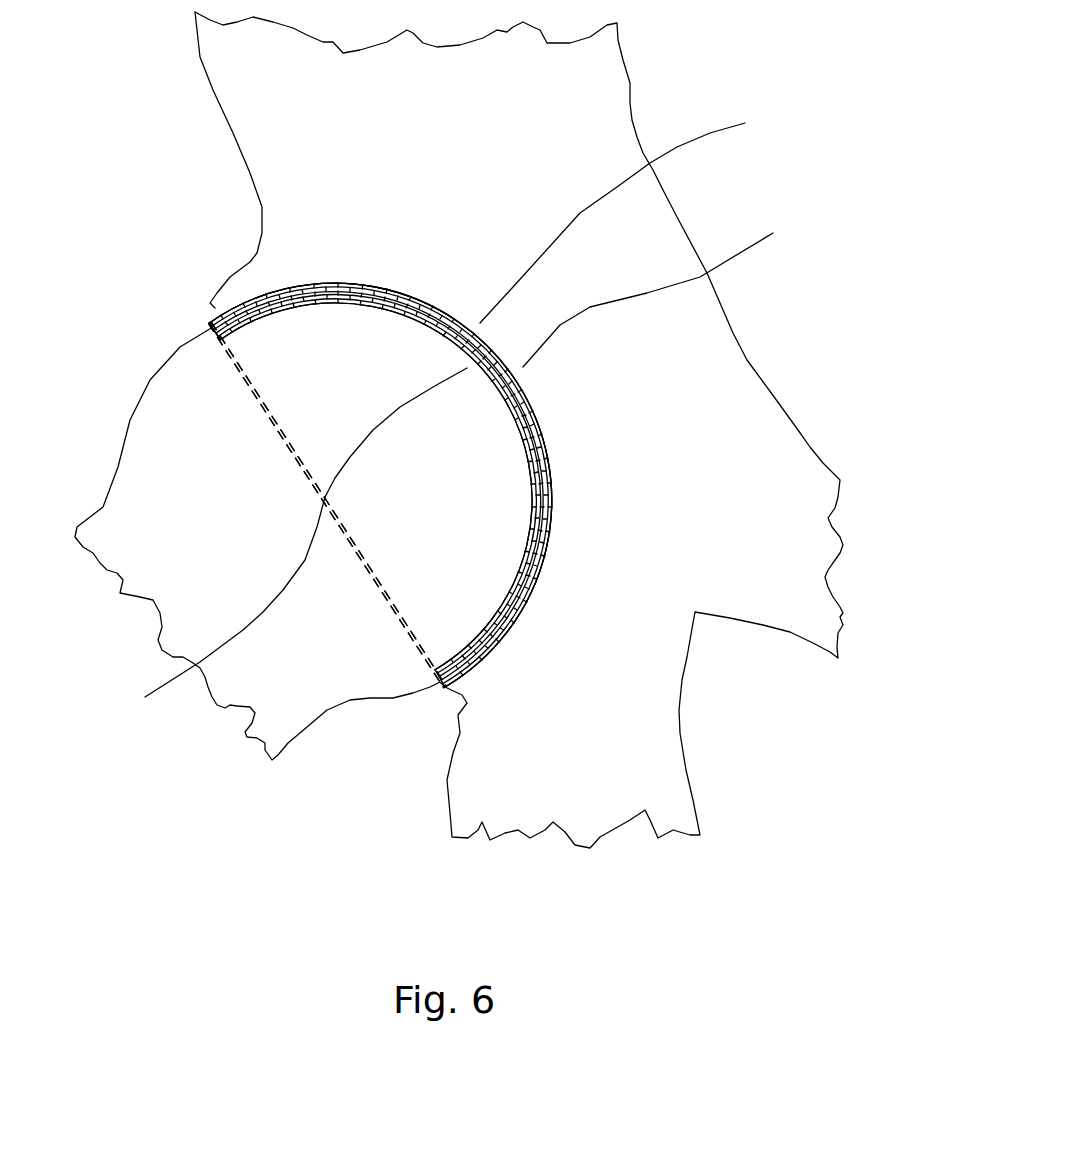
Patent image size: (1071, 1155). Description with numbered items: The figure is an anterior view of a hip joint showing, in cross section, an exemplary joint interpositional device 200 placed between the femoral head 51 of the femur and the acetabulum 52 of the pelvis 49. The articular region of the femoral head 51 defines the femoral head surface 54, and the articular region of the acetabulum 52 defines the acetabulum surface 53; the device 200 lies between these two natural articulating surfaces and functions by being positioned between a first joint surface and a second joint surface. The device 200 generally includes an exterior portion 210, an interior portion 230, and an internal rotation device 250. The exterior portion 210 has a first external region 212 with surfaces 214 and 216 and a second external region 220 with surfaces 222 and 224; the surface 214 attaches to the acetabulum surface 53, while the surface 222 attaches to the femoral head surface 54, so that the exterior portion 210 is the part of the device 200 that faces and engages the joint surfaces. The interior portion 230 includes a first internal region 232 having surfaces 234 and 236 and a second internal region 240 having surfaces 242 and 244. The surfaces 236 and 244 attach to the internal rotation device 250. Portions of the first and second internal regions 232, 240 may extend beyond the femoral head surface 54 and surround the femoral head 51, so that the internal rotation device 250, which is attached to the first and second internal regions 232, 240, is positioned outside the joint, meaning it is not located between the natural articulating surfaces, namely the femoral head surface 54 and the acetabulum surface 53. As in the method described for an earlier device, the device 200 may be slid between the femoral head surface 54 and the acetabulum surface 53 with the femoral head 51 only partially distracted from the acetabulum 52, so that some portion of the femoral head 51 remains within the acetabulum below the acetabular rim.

The pelvis 49 is at (519, 430).
The femoral head 51 is at (256, 541).
The acetabulum 52 is at (663, 289).
The acetabulum surface 53 is at (779, 140).
The femoral head surface 54 is at (291, 543).
The joint interpositional device 200 is at (578, 497).
The exterior portion 210 is at (400, 300).
The first external region 212 is at (412, 485).
The surface 214 is at (660, 425).
The surface 216 is at (619, 477).
The second external region 220 is at (377, 486).
The surface 222 is at (376, 486).
The surface 224 is at (376, 486).
The interior portion 230 is at (333, 283).
The first internal region 232 is at (380, 384).
The surface 234 is at (247, 237).
The surface 236 is at (164, 203).
The second internal region 240 is at (328, 505).
The surface 242 is at (250, 451).
The surface 244 is at (204, 485).
The internal rotation device 250 is at (201, 328).